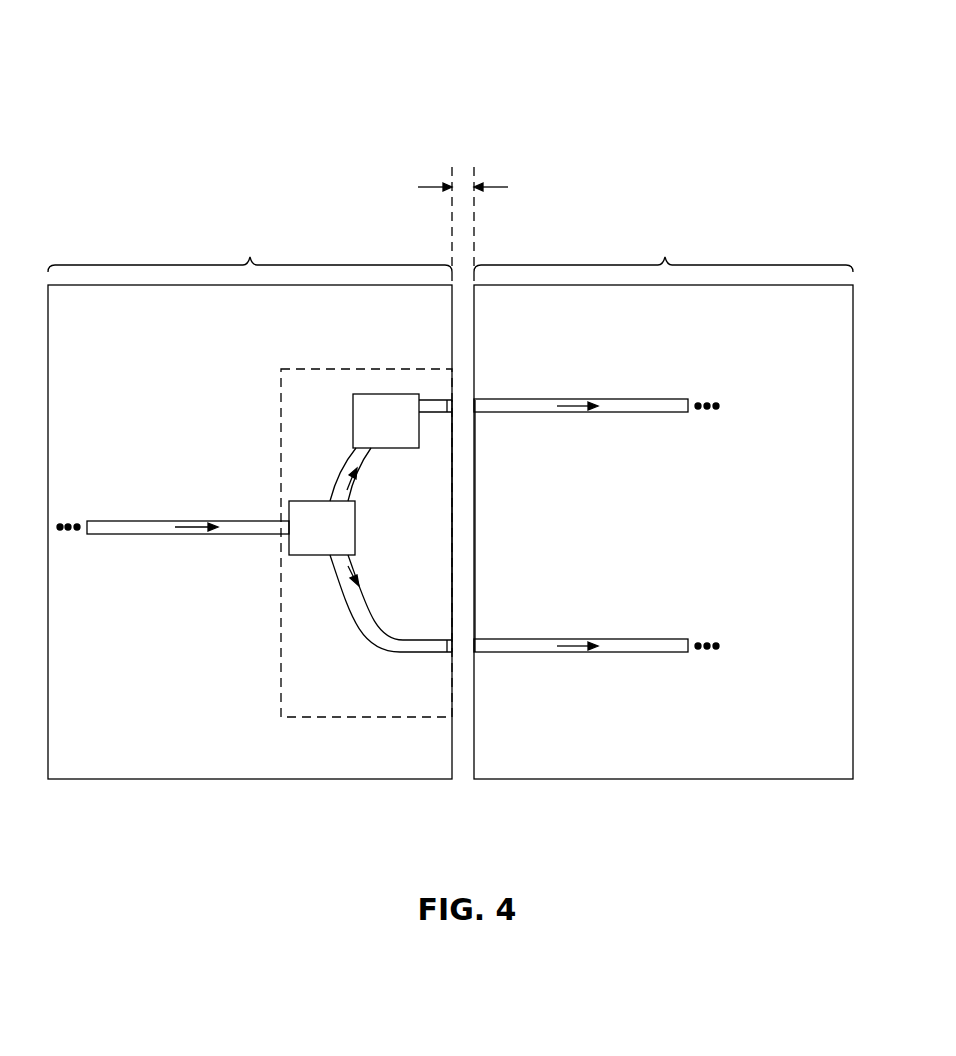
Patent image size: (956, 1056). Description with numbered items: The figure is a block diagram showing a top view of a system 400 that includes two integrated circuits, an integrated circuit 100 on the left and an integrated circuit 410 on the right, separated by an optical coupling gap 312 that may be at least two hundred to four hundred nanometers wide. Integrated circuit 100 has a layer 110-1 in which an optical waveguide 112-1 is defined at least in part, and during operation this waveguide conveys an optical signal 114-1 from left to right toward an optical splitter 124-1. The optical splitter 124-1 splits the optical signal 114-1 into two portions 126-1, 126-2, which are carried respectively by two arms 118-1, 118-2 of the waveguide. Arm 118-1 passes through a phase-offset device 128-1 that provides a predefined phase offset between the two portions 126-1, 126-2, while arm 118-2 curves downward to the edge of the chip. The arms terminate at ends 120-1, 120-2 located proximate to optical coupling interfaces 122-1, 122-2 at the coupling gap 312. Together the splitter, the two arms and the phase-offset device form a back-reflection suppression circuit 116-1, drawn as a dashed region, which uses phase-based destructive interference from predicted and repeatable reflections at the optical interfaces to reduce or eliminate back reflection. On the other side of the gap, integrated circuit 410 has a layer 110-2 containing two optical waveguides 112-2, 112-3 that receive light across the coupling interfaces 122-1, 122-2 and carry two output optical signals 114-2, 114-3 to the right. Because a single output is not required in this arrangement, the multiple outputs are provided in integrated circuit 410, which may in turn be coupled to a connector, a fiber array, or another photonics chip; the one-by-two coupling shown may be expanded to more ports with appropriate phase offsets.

The system 400 is at (197, 55).
The optical coupling gap 312 is at (460, 170).
The integrated circuit 100 is at (250, 230).
The integrated circuit 410 is at (663, 230).
The layer 110-1 is at (53, 334).
The layer 110-2 is at (792, 334).
The optical waveguide 112-1 is at (155, 521).
The optical waveguide 112-2 is at (623, 399).
The optical waveguide 112-3 is at (623, 639).
The optical signal 114-1 is at (192, 530).
The optical signal 114-2 is at (588, 412).
The optical signal 114-3 is at (590, 652).
The back-reflection suppression circuit 116-1 is at (378, 717).
The arm 118-1 is at (357, 465).
The arm 118-2 is at (363, 603).
The end 120-1 is at (447, 412).
The end 120-2 is at (445, 643).
The optical coupling interface 122-1 is at (452, 400).
The optical coupling interface 122-2 is at (452, 652).
The optical splitter 124-1 is at (297, 549).
The portion of optical signal 126-1 is at (352, 482).
The portion of optical signal 126-2 is at (350, 573).
The phase-offset device 128-1 is at (361, 441).